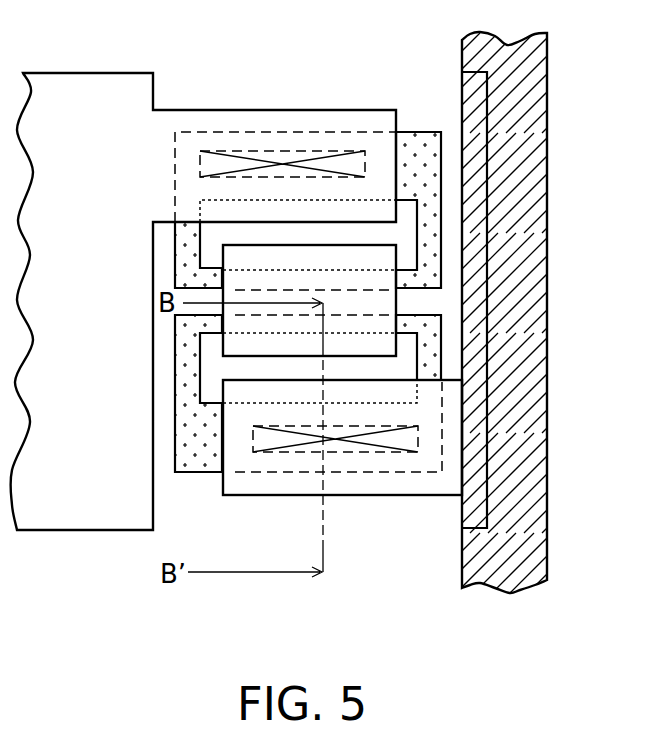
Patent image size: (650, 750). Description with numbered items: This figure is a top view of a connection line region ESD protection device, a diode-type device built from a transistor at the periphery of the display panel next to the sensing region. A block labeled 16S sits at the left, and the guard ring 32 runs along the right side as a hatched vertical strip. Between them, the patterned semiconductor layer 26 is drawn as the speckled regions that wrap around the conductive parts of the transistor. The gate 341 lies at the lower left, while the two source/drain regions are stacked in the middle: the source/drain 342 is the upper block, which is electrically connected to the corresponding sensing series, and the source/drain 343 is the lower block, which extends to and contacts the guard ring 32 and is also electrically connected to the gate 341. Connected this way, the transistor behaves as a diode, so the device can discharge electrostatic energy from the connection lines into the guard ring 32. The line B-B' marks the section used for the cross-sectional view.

The substrate 16S is at (203, 301).
The patterned semiconductor layer 26 is at (405, 215).
The guard ring 32 is at (545, 125).
The gate 341 is at (200, 455).
The source/drain 342 is at (382, 302).
The source/drain 343 is at (417, 483).